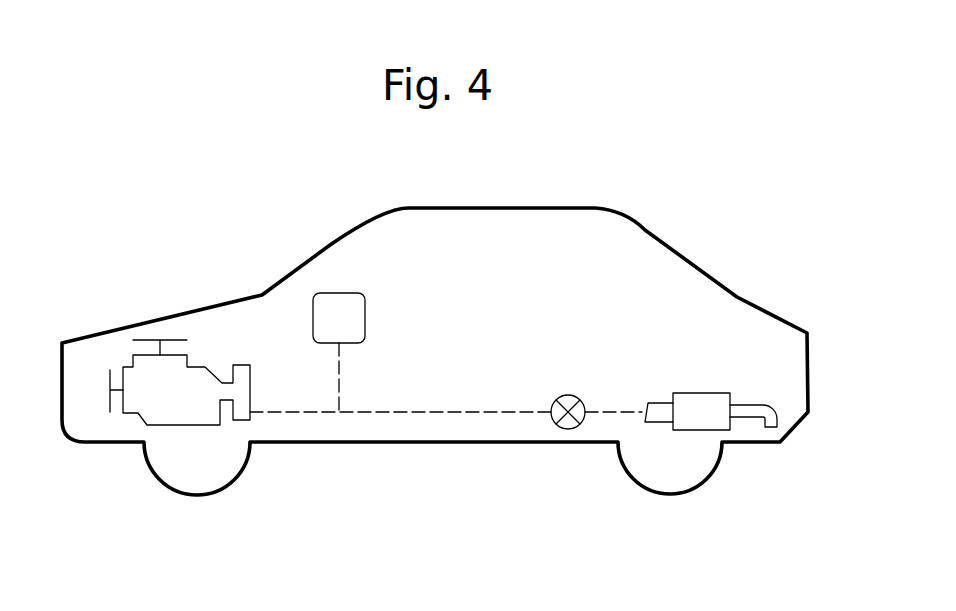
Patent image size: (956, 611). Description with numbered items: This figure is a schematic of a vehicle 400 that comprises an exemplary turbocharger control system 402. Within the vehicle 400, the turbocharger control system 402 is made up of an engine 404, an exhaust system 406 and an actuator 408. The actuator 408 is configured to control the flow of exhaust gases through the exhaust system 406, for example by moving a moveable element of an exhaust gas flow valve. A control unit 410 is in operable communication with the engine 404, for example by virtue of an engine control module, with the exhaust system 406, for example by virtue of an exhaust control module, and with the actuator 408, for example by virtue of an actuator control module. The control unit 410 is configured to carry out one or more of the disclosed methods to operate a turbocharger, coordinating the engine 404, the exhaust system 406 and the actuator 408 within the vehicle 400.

The vehicle 400 is at (292, 270).
The turbocharger control system 402 is at (493, 327).
The engine 404 is at (167, 425).
The exhaust system 406 is at (715, 393).
The actuator 408 is at (580, 393).
The control unit 410 is at (338, 292).